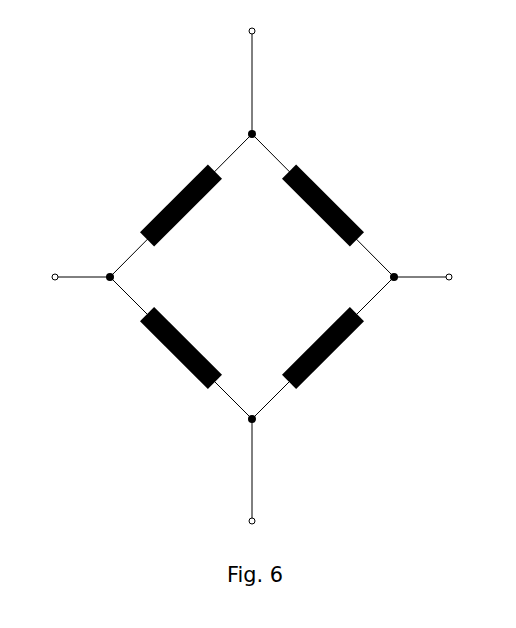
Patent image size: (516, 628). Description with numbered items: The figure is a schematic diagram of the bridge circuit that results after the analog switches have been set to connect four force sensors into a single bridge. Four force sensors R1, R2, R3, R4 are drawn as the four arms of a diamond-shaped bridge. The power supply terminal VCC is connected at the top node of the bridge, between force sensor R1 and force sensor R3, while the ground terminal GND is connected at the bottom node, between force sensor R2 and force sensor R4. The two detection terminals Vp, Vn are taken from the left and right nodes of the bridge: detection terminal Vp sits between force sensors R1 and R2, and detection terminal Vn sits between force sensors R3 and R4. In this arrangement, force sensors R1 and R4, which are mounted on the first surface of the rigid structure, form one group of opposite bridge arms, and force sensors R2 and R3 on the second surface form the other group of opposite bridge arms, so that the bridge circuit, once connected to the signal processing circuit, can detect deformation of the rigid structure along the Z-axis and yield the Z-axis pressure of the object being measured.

The force sensor R1 is at (181, 205).
The force sensor R2 is at (181, 348).
The force sensor R3 is at (323, 205).
The force sensor R4 is at (323, 348).
The power supply terminal VCC is at (263, 67).
The ground terminal GND is at (259, 486).
The detection terminal Vp is at (67, 266).
The detection terminal Vn is at (440, 270).